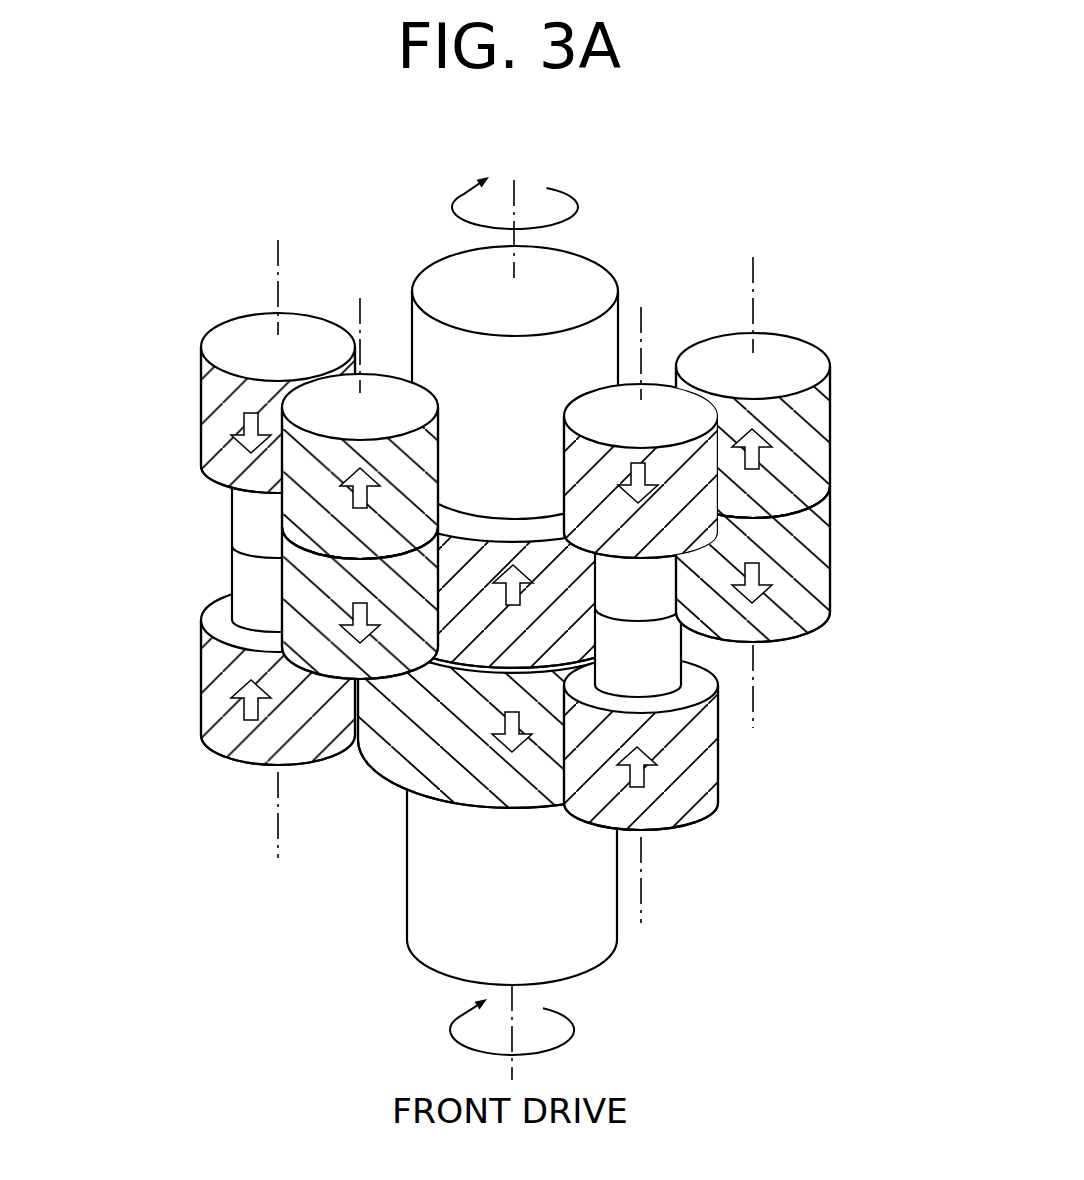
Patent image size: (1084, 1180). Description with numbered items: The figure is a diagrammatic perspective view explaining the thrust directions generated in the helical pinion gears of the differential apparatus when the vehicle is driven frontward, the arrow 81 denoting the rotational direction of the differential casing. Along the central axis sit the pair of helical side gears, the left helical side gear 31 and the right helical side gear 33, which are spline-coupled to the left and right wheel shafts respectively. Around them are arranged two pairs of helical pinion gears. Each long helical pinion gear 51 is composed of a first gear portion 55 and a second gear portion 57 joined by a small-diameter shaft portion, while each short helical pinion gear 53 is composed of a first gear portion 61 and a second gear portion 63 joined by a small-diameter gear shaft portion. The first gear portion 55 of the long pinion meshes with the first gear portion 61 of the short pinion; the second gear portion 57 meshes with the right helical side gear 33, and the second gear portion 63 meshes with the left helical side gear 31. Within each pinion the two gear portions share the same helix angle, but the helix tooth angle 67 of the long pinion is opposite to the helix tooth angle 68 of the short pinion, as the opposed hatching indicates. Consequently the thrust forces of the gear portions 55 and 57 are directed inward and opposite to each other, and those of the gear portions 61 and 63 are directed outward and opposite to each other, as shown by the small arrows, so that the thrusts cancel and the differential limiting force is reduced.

The left helical side gear 31 is at (503, 547).
The right helical side gear 33 is at (507, 797).
The long helical pinion gear 51 is at (228, 292).
The short helical pinion gear 53 is at (379, 350).
The first gear portion 55 is at (216, 449).
The second gear portion 57 is at (216, 671).
The first gear portion 61 is at (428, 431).
The second gear portion 63 is at (429, 640).
The helix tooth angle 67 is at (414, 605).
The helix tooth angle 68 is at (614, 506).
The rotational direction 81 is at (455, 197).